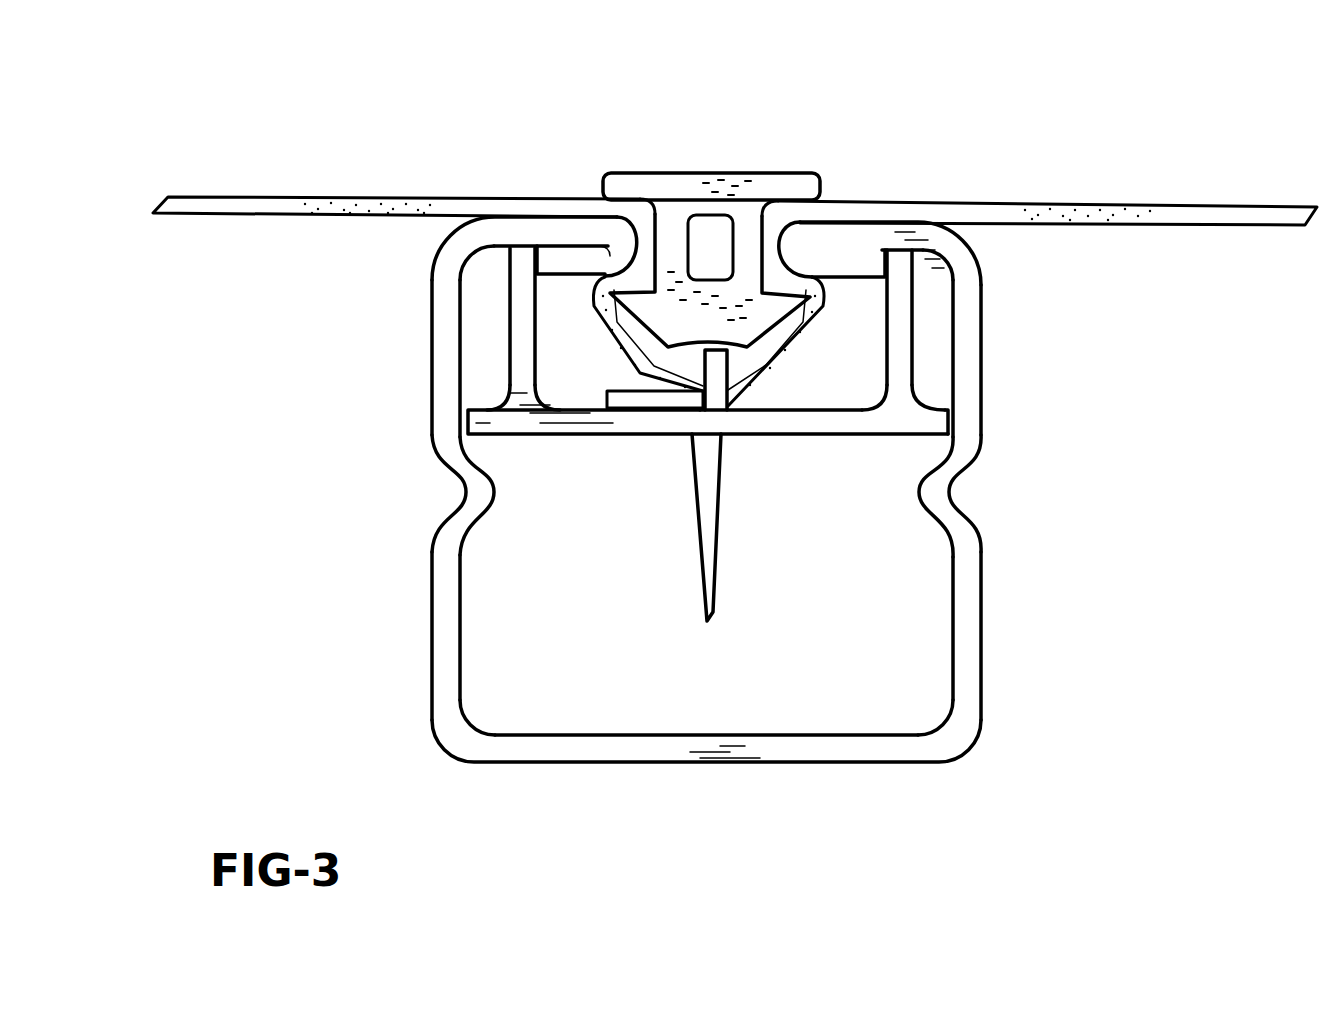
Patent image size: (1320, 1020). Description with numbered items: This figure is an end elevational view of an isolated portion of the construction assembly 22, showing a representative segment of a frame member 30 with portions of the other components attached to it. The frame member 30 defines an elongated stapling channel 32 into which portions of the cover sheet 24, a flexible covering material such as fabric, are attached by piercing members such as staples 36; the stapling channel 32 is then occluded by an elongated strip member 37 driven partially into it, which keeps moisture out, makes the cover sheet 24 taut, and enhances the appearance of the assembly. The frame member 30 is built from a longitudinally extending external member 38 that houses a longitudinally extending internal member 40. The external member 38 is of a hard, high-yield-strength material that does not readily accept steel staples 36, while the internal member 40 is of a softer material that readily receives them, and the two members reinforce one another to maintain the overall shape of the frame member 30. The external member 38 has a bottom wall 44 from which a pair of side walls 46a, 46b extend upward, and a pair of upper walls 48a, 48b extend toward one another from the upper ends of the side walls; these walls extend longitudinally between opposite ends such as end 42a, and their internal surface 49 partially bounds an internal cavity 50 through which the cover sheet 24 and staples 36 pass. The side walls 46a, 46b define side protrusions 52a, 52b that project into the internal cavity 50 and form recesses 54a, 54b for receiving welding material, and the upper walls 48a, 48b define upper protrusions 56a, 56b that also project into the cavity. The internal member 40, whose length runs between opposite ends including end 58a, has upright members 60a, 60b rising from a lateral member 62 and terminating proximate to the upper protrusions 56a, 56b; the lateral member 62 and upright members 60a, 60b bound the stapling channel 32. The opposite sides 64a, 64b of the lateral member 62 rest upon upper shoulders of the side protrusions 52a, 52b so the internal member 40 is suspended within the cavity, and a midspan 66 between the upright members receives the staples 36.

The construction assembly 22 is at (1112, 88).
The cover sheet 24 is at (236, 198).
The frame member 30 is at (1105, 437).
The stapling channel 32 is at (834, 386).
The staple 36 is at (718, 538).
The strip member 37 is at (655, 160).
The external member 38 is at (1020, 649).
The internal member 40 is at (613, 448).
The end of external member 42a is at (650, 747).
The bottom wall 44 is at (800, 762).
The side wall 46a is at (432, 623).
The side wall 46b is at (982, 608).
The upper wall 48a is at (560, 233).
The upper wall 48b is at (862, 235).
The internal surface 49 is at (950, 270).
The internal cavity 50 is at (512, 690).
The side protrusion 52a is at (500, 489).
The side protrusion 52b is at (923, 492).
The recess 54a is at (430, 496).
The recess 54b is at (975, 499).
The upper protrusion 56a is at (577, 268).
The upper protrusion 56b is at (855, 268).
The end of internal member 58a is at (515, 398).
The upright member 60a is at (503, 303).
The upright member 60b is at (913, 342).
The lateral member 62 is at (778, 425).
The side of lateral member 64a is at (490, 398).
The side of lateral member 64b is at (925, 403).
The midspan 66 is at (678, 432).